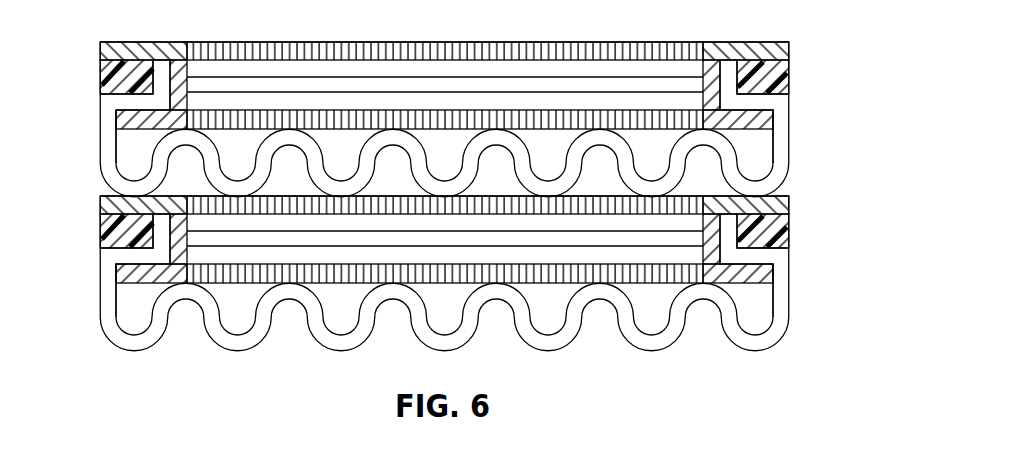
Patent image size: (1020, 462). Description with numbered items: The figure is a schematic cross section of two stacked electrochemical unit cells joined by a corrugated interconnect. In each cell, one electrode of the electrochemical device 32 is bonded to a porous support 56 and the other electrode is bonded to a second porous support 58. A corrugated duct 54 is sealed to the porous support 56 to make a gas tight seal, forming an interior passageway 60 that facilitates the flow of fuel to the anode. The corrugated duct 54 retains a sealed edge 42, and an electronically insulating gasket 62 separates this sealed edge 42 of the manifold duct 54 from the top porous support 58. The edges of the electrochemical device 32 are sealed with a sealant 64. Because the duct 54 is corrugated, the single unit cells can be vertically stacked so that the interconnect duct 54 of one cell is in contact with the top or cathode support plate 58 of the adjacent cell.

The electrochemical device 32 is at (583, 84).
The sealing edge 42 is at (790, 110).
The corrugated duct 54 is at (737, 163).
The porous support 56 is at (327, 53).
The second porous support 58 is at (118, 52).
The interior passageway 60 is at (127, 158).
The electronically insulating gasket 62 is at (108, 76).
The sealant 64 is at (177, 80).